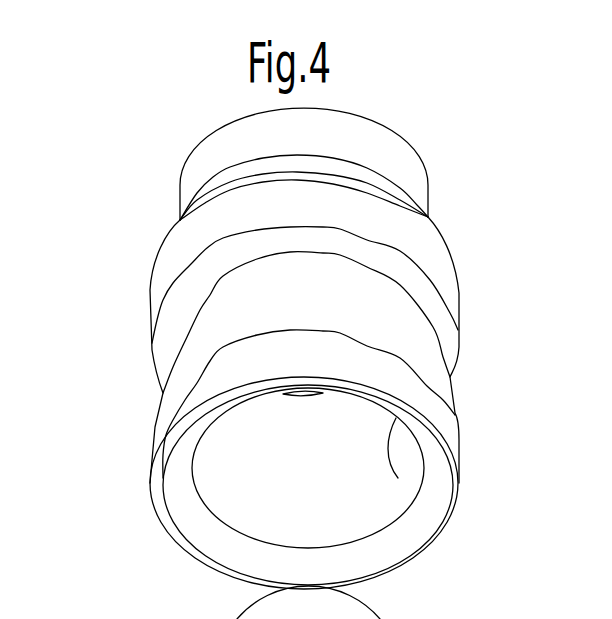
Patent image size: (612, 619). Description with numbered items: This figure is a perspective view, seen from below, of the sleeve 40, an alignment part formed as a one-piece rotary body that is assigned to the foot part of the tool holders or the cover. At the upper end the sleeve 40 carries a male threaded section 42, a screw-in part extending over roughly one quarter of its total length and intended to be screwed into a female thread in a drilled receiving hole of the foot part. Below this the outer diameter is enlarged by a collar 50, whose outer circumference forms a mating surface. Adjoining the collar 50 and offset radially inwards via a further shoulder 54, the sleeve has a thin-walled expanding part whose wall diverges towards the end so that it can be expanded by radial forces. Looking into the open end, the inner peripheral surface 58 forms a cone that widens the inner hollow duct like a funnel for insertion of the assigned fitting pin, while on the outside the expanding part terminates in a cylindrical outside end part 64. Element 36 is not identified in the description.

The ball / adjacent component 36 is at (396, 618).
The sleeve 40 is at (137, 285).
The male threaded section 42 is at (353, 130).
The collar 50 is at (187, 240).
The further shoulder 54 is at (171, 317).
The inner peripheral surface 58 is at (398, 478).
The cylindrical outside end part 64 is at (188, 392).